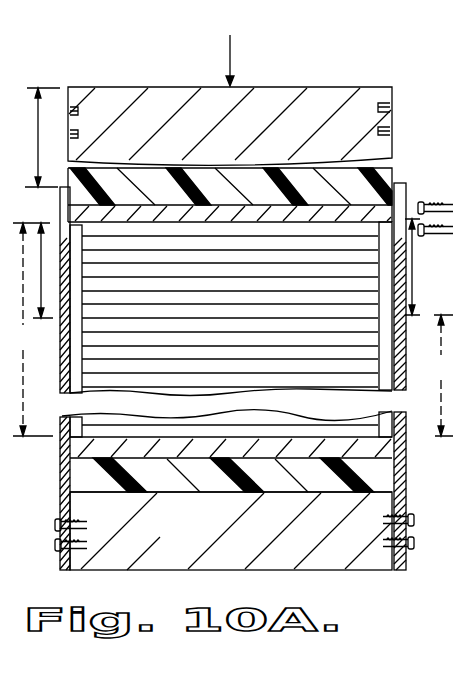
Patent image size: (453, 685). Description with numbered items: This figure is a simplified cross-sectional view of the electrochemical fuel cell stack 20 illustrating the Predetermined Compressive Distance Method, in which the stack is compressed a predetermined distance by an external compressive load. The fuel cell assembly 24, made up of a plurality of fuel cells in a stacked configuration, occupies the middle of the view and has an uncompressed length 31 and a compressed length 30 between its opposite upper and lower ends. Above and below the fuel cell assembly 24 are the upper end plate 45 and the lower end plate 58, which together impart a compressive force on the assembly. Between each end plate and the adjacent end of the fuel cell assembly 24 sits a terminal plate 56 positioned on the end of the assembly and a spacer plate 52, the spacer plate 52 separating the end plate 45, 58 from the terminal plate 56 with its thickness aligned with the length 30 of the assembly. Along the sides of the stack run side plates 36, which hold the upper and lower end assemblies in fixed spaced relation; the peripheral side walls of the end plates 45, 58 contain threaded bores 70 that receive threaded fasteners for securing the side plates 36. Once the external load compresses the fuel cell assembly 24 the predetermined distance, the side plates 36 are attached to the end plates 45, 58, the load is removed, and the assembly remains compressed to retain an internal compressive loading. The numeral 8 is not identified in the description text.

The fuel cell stack 20 is at (372, 60).
The upper end plate 45 is at (103, 98).
The threaded bores 70 is at (395, 107).
The spacer plate 52 is at (113, 177).
The terminal plate 56 is at (160, 210).
The fuel cell assembly 24 is at (268, 250).
The lower end plate 58 is at (110, 553).
The side plate 36 is at (62, 490).
The bolts 8 is at (428, 203).
The uncompressed length 31 is at (33, 329).
The compressed length 30 is at (429, 327).